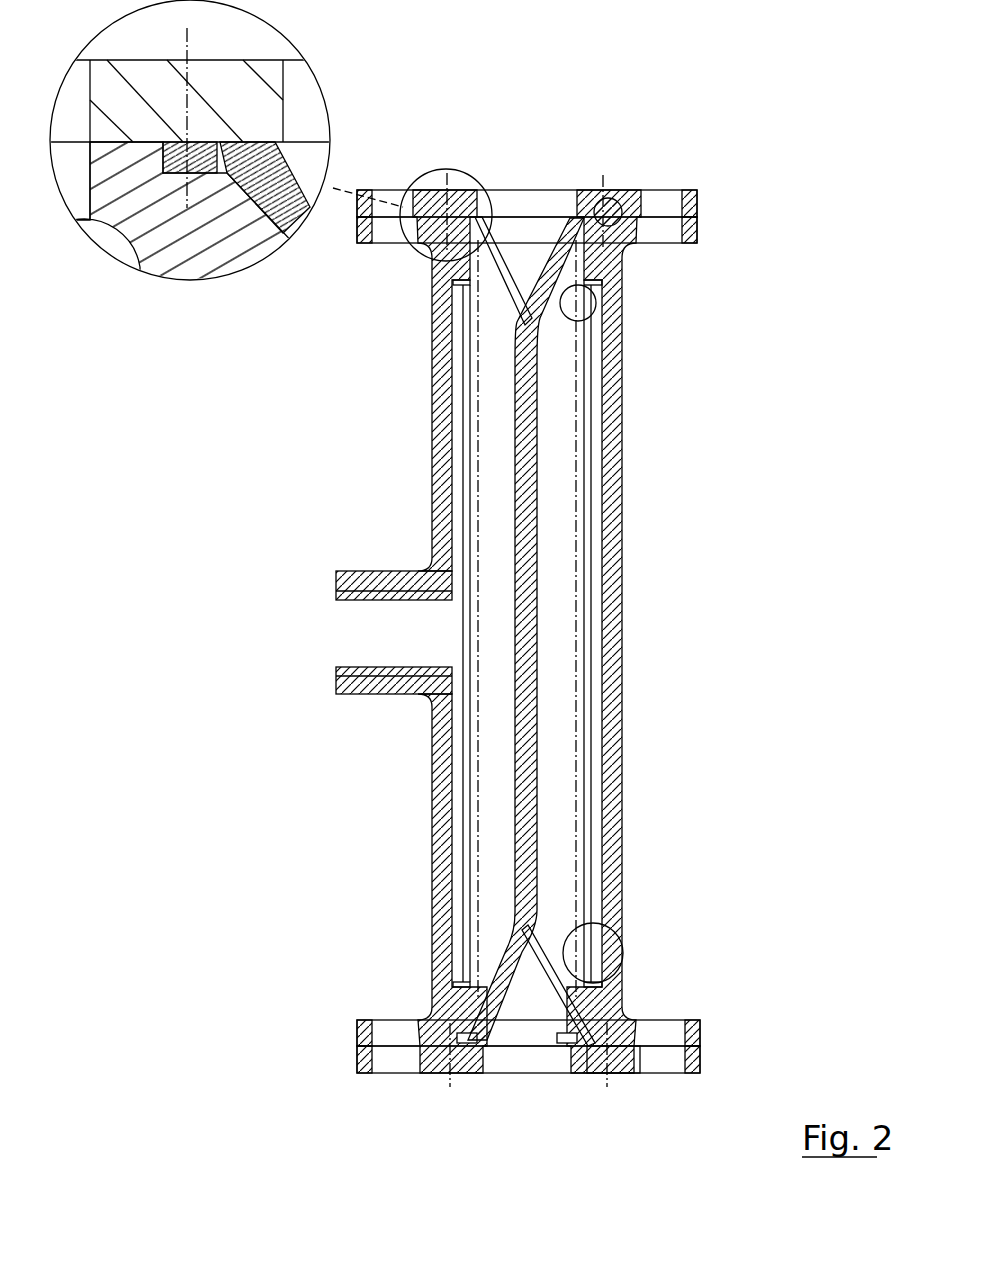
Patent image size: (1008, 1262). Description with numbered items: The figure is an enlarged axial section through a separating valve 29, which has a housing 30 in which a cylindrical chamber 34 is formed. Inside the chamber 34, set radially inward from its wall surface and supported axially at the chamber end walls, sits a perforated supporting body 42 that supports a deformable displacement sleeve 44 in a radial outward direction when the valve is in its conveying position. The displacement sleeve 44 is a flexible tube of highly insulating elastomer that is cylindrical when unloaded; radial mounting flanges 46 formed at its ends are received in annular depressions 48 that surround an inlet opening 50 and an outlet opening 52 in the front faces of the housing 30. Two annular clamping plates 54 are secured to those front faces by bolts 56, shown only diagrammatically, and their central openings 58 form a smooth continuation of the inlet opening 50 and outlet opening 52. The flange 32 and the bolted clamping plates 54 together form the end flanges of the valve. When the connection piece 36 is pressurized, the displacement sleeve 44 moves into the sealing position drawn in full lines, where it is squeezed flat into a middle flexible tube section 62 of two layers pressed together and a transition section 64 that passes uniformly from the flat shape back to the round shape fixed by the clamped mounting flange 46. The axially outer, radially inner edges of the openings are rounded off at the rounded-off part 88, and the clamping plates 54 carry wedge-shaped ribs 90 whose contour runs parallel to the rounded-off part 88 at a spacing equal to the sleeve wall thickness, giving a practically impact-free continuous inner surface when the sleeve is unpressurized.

The separating valve 29 is at (735, 535).
The housing 30 is at (623, 763).
The flange 32 is at (698, 237).
The cylindrical chamber 34 is at (580, 645).
The connection piece 36 is at (373, 688).
The perforated supporting body 42 is at (593, 710).
The displacement sleeve 44 is at (548, 533).
The mounting flange 46 is at (455, 183).
The annular depression 48 is at (627, 243).
The inlet opening 50 is at (622, 922).
The outlet opening 52 is at (620, 310).
The clamping plate 54 is at (698, 206).
The bolt 56 is at (627, 1077).
The central opening 58 is at (570, 1077).
The middle flexible tube section 62 is at (520, 440).
The transition section 64 is at (505, 296).
The rounded-off part 88 is at (287, 233).
The wedge-shaped rib 90 is at (273, 147).